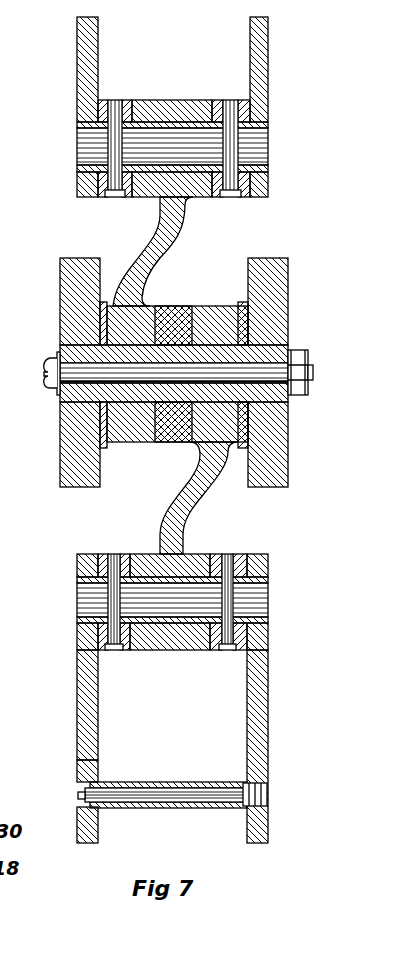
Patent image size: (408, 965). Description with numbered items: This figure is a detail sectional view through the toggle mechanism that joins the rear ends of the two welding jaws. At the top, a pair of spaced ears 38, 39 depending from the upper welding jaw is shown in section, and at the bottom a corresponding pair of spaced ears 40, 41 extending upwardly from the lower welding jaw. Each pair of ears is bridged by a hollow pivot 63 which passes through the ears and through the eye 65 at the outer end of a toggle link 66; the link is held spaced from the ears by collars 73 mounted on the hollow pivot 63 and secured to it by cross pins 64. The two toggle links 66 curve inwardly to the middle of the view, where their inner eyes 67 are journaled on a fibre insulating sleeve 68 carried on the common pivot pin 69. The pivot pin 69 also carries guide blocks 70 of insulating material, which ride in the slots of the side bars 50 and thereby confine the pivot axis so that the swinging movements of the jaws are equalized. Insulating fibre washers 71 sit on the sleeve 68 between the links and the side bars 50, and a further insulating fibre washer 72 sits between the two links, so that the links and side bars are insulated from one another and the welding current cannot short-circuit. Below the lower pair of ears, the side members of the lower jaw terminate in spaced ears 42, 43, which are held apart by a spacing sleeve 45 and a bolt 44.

The ear 38 is at (90, 83).
The ear 39 is at (257, 75).
The ear 40 is at (90, 683).
The ear 41 is at (253, 660).
The spaced ear 42 is at (85, 755).
The spaced ear 43 is at (255, 773).
The bolt 44 is at (152, 792).
The spacing sleeve 45 is at (152, 783).
The side bar 50 is at (63, 300).
The hollow pivot 63 is at (250, 143).
The cross pin 64 is at (115, 100).
The eye 65 is at (203, 198).
The toggle link 66 is at (162, 253).
The eye 67 is at (130, 418).
The fibre insulating sleeve 68 is at (200, 355).
The pivot pin 69 is at (288, 400).
The guide block 70 is at (288, 358).
The insulating fibre washer 71 is at (105, 302).
The insulating fibre washer 72 is at (167, 443).
The collar 73 is at (127, 110).